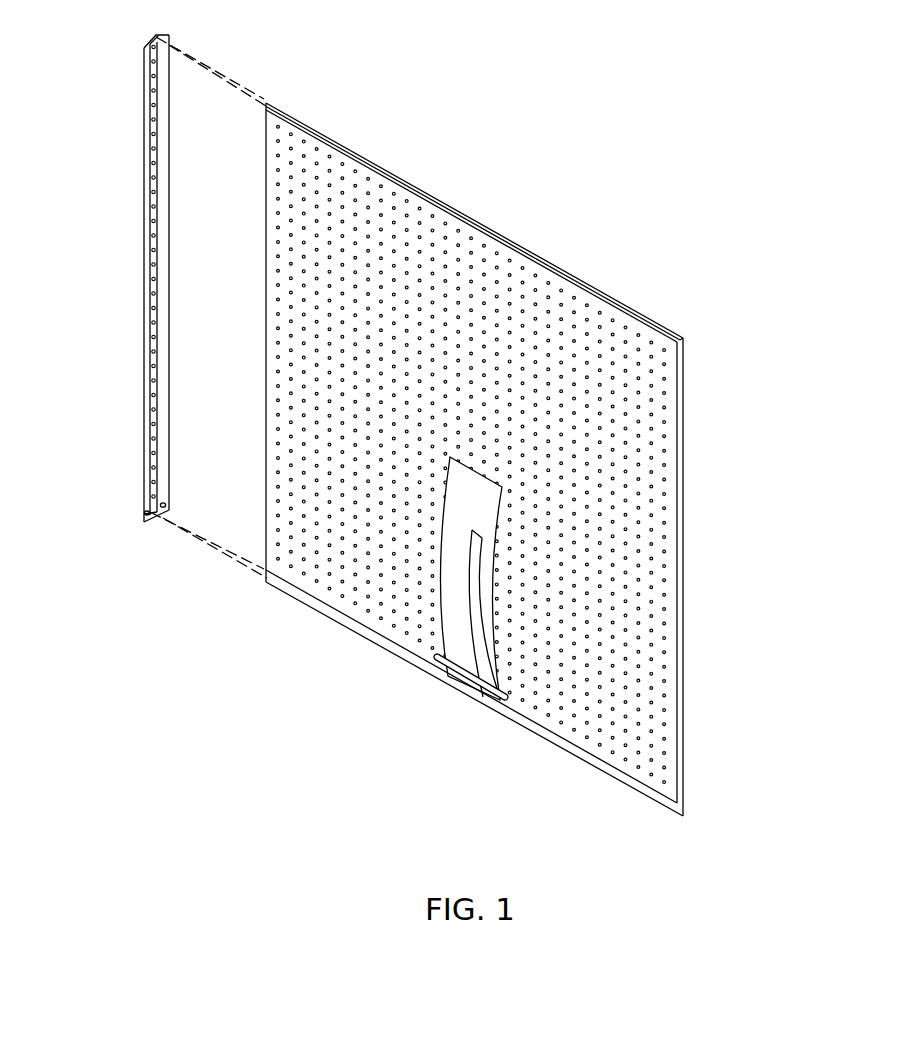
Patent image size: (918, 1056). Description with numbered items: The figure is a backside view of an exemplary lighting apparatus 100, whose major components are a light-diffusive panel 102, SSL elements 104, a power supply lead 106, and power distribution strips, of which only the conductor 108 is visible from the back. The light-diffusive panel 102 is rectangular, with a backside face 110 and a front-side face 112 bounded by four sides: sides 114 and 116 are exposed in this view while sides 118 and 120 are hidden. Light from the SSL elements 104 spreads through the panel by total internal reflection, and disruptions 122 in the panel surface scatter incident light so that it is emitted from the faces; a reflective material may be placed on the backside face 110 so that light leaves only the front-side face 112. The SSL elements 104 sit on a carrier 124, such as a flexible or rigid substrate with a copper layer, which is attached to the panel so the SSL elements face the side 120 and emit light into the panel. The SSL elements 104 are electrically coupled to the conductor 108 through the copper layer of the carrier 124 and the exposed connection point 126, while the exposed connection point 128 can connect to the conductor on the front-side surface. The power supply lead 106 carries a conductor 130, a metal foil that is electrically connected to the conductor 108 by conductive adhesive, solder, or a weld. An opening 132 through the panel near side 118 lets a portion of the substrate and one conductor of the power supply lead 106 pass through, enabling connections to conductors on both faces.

The lighting apparatus 100 is at (659, 103).
The light-diffusive panel 102 is at (667, 332).
The SSL elements 104 is at (153, 162).
The power supply lead 106 is at (457, 617).
The power distribution strip 108 is at (565, 752).
The backside face 110 is at (497, 243).
The front-side face 112 is at (617, 298).
The side 114 is at (372, 162).
The side 116 is at (685, 668).
The side 118 is at (640, 795).
The side 120 is at (247, 128).
The disruptions 122 is at (668, 538).
The carrier 124 is at (153, 298).
The exposed connection point 126 is at (147, 513).
The exposed connection point 128 is at (165, 505).
The conductor 130 is at (482, 600).
The opening 132 is at (433, 663).